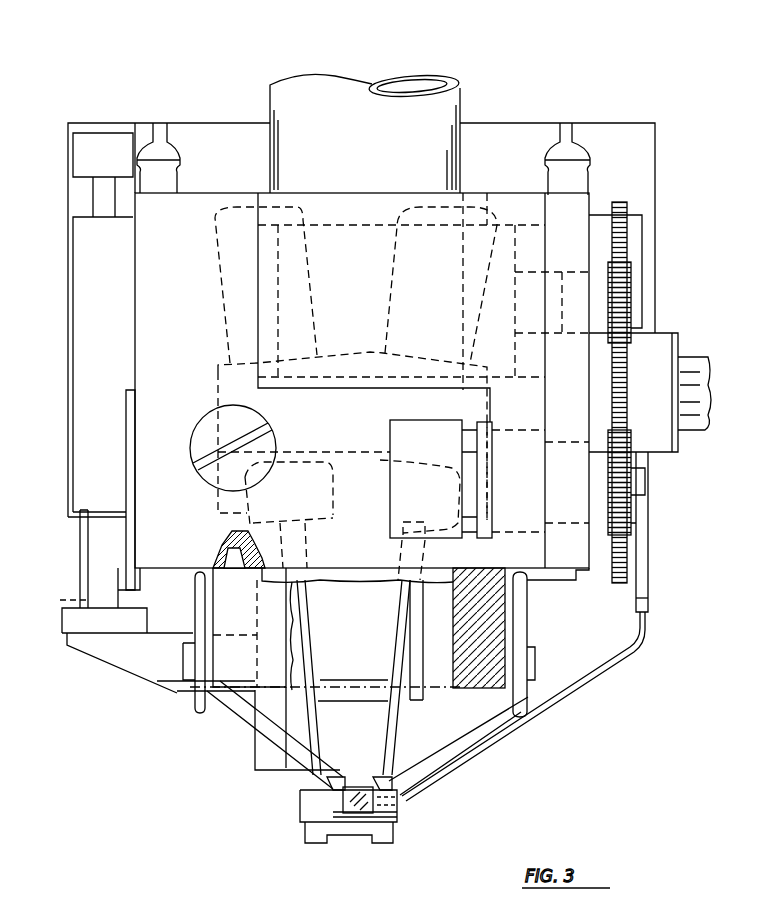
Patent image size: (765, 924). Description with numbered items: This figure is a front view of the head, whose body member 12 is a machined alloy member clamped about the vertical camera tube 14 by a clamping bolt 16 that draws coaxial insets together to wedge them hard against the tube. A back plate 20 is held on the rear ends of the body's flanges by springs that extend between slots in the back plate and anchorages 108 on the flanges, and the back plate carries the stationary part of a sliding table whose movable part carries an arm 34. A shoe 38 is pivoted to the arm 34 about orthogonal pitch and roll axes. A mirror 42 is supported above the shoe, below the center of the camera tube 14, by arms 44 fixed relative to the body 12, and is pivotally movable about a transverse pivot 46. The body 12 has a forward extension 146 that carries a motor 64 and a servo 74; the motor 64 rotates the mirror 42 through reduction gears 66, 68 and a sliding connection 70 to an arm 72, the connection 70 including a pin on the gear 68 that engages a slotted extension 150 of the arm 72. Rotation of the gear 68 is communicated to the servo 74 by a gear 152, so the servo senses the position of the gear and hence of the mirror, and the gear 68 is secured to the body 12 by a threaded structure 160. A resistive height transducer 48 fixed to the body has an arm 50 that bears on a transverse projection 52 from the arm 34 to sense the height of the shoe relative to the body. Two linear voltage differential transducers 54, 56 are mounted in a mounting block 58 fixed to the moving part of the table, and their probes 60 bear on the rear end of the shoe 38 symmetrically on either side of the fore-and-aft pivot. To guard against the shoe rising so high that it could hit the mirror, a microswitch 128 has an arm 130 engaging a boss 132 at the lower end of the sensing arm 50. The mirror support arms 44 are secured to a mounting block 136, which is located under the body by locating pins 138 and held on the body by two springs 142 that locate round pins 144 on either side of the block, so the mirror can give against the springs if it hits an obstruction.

The body member 12 is at (519, 206).
The camera tube 14 is at (352, 100).
The clamping bolt 16 is at (200, 434).
The back plate 20 is at (192, 128).
The arm 34 is at (270, 776).
The shoe 38 is at (385, 835).
The mirror 42 is at (358, 806).
The arms 44 is at (327, 770).
The transverse pivot 46 is at (337, 802).
The resistive height transducer 48 is at (95, 372).
The arm 50 is at (62, 604).
The transverse projection 52 is at (108, 650).
The linear voltage differential transducer 54 is at (218, 270).
The linear voltage differential transducer 56 is at (395, 218).
The mounting block 58 is at (218, 373).
The probes 60 is at (400, 623).
The motor 64 is at (496, 222).
The reduction gear 66 is at (630, 296).
The reduction gear 68 is at (627, 370).
The sliding connection 70 is at (652, 552).
The arm 72 is at (596, 657).
The servo 74 is at (400, 438).
The anchorages 108 is at (578, 183).
The microswitch 128 is at (77, 544).
The arm 130 is at (96, 600).
The boss 132 is at (80, 624).
The mounting block 136 is at (233, 672).
The locating pins 138 is at (214, 564).
The springs 142 is at (199, 603).
The pins 144 is at (180, 690).
The forward extension 146 is at (328, 392).
The slotted extension 150 is at (645, 596).
The gear 152 is at (624, 490).
The threaded structure 160 is at (708, 430).